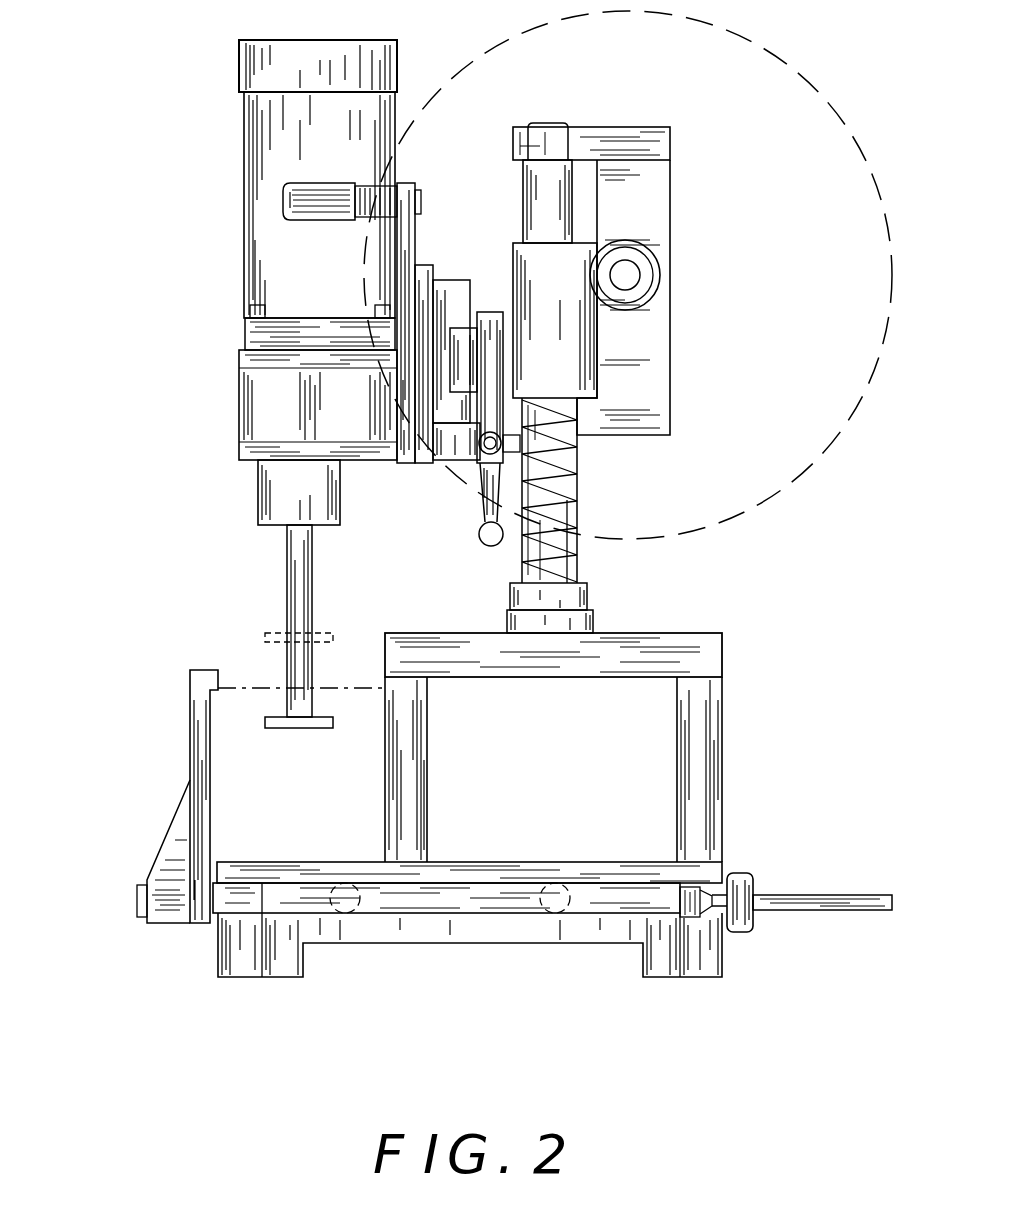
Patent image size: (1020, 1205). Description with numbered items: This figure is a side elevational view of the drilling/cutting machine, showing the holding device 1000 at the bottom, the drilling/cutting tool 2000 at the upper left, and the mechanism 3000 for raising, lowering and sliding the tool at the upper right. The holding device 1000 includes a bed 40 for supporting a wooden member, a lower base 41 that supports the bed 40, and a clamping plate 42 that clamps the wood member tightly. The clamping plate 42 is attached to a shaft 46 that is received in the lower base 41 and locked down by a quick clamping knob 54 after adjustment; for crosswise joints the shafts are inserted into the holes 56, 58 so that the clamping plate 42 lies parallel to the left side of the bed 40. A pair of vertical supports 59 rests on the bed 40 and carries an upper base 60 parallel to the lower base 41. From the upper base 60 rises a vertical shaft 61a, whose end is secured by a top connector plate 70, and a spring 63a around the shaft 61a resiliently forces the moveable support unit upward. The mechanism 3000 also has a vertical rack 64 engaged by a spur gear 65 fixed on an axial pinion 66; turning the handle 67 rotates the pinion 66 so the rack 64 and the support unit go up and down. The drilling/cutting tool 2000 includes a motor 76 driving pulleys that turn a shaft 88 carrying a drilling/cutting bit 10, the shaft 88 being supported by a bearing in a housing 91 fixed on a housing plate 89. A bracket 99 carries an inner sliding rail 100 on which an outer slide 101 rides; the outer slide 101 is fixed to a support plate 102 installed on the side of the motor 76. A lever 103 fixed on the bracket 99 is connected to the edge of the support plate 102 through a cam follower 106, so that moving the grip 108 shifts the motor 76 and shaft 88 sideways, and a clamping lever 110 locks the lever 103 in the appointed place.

The drilling/cutting tool 2000 is at (207, 73).
The motor 76 is at (258, 130).
The grip 108 is at (300, 207).
The support plate 102 is at (408, 375).
The lever 103 is at (406, 273).
The outer slide 101 is at (452, 290).
The bracket 99 is at (487, 312).
The inner sliding rail 100 is at (457, 373).
The clamping lever 110 is at (470, 530).
The cam follower 106 is at (405, 356).
The housing plate 89 is at (240, 446).
The housing 91 is at (262, 490).
The shaft 88 is at (295, 556).
The drilling/cutting bit 10 is at (275, 660).
The clamping plate 42 is at (201, 712).
The holding device 1000 is at (170, 807).
The top connector plate 70 is at (615, 137).
The vertical rack 64 is at (577, 247).
The spur gear 65 is at (637, 250).
The axial pinion 66 is at (628, 280).
The mechanism 3000 is at (700, 400).
The spring 63a is at (550, 472).
The vertical shaft 61a is at (580, 555).
The handle 67 is at (795, 477).
The upper base 60 is at (708, 650).
The vertical support 59 is at (708, 693).
The bed 40 is at (622, 870).
The hole 58 is at (552, 908).
The hole 56 is at (347, 905).
The lower base 41 is at (432, 945).
The quick clamping knob 54 is at (743, 873).
The shaft 46 is at (863, 897).